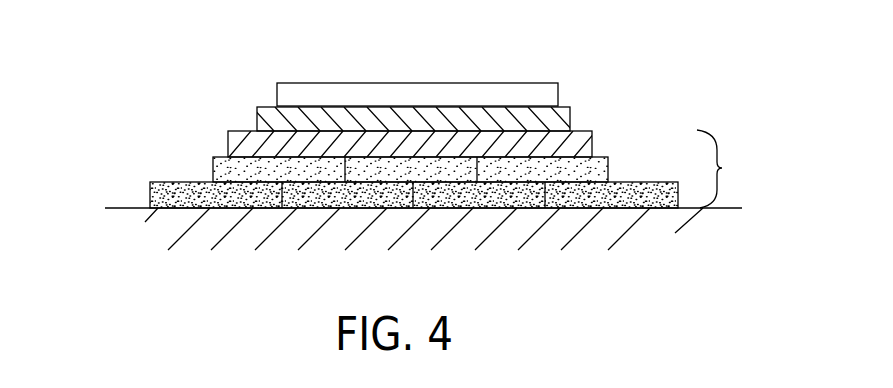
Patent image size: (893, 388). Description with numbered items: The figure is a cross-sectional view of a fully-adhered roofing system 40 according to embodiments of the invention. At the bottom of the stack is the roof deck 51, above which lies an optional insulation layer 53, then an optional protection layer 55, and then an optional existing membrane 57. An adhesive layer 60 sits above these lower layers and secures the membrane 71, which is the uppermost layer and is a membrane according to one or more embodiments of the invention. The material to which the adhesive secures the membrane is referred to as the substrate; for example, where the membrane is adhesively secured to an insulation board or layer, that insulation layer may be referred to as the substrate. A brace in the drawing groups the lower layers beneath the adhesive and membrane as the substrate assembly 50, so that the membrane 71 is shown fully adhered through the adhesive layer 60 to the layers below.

The roofing system 40 is at (181, 96).
The substrate structure 50 is at (722, 168).
The roof deck 51 is at (150, 221).
The insulation layer 53 is at (150, 192).
The protection layer 55 is at (213, 172).
The existing membrane 57 is at (232, 141).
The adhesive layer 60 is at (572, 120).
The membrane 71 is at (536, 82).